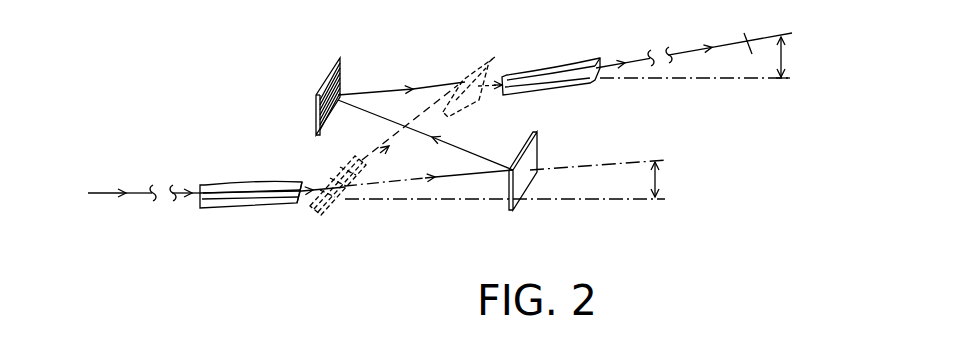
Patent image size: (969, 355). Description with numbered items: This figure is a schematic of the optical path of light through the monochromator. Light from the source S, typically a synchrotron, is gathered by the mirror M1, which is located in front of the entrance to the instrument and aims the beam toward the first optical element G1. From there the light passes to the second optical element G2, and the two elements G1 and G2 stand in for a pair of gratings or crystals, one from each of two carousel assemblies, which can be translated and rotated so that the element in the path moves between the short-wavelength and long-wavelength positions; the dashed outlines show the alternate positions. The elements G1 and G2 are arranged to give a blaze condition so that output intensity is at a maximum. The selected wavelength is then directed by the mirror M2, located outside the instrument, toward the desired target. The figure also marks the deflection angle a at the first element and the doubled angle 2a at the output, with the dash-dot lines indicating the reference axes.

The source S is at (141, 207).
The mirror M1 is at (272, 211).
The mirror M2 is at (647, 64).
The first optical element G1 is at (490, 184).
The second optical element G2 is at (406, 107).
The deflection angle a is at (655, 179).
The doubled deflection angle 2a is at (781, 57).